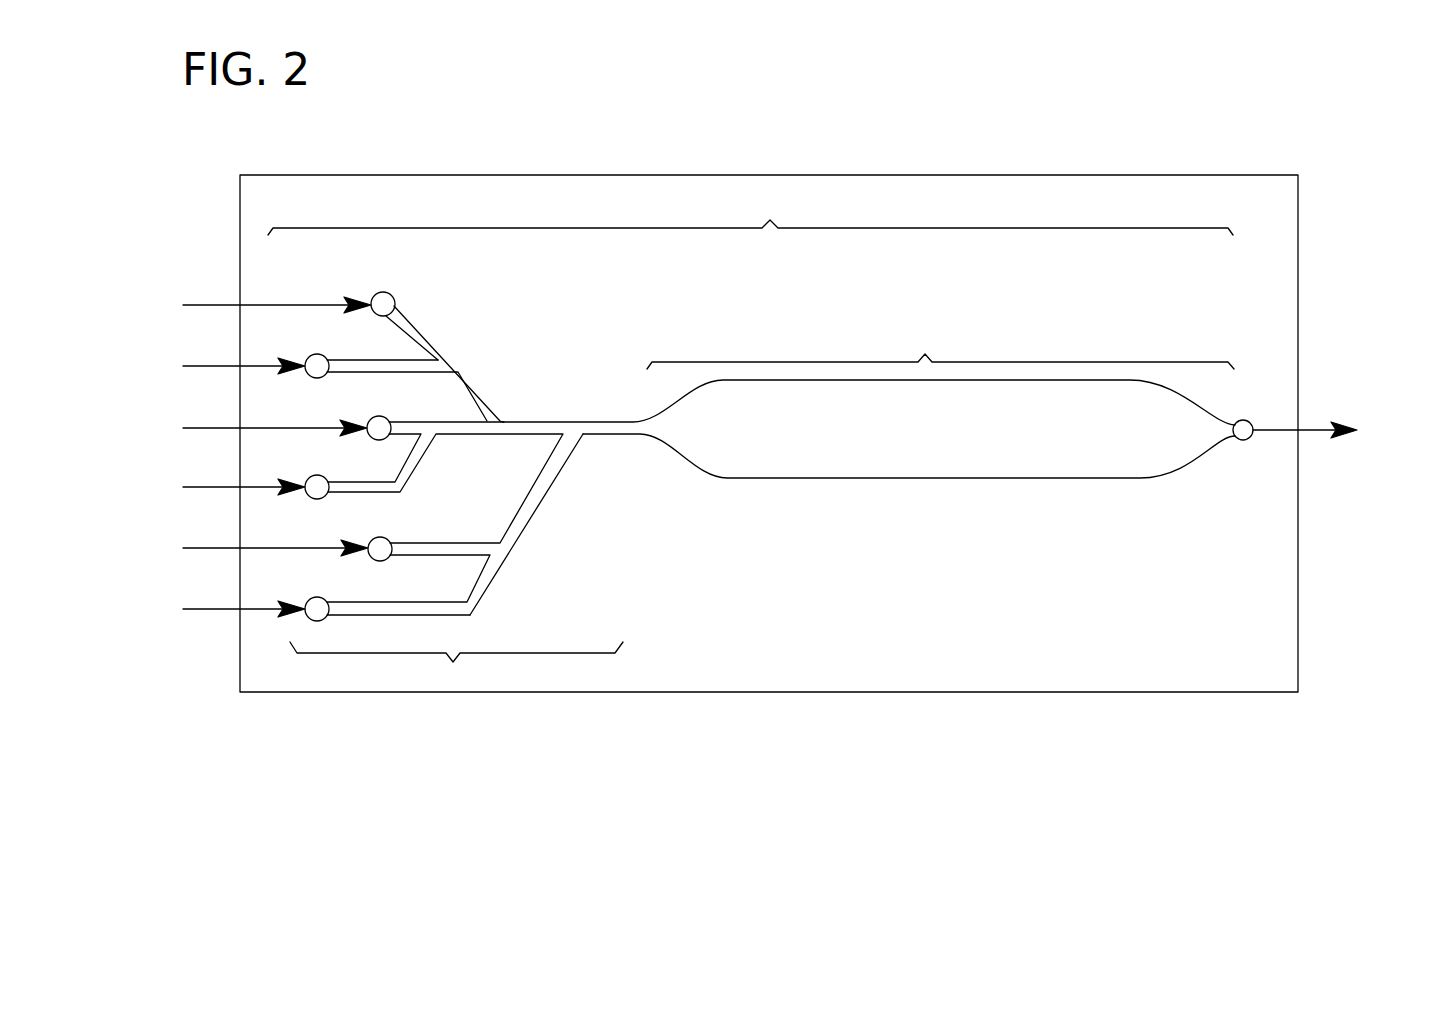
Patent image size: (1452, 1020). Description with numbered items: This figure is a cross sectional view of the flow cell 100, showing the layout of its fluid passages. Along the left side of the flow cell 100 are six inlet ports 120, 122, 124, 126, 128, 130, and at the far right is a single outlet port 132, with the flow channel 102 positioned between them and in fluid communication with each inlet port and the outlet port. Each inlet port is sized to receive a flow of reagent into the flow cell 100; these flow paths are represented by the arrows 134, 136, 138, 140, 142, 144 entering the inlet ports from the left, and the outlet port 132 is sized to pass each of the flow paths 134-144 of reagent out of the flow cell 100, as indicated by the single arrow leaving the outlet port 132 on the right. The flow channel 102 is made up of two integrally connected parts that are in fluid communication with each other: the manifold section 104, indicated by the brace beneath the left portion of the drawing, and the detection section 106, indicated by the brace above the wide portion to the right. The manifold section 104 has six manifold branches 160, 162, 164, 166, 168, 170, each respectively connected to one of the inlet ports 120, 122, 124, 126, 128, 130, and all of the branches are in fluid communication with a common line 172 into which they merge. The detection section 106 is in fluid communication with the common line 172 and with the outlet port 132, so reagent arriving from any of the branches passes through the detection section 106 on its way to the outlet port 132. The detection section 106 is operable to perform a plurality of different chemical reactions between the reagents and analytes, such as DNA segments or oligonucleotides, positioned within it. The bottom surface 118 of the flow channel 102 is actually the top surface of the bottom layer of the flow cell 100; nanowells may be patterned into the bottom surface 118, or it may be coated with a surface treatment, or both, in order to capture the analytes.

The flow cell 100 is at (822, 143).
The flow channel 102 is at (750, 215).
The manifold section 104 is at (456, 666).
The detection section 106 is at (940, 348).
The bottom surface 118 is at (688, 443).
The inlet port 120 is at (393, 297).
The inlet port 122 is at (316, 354).
The inlet port 124 is at (383, 416).
The inlet port 126 is at (309, 496).
The inlet port 128 is at (383, 537).
The inlet port 130 is at (309, 617).
The outlet port 132 is at (1247, 439).
The flow path 134 is at (218, 303).
The flow path 136 is at (209, 364).
The flow path 138 is at (220, 426).
The flow path 140 is at (215, 485).
The flow path 142 is at (218, 546).
The flow path 144 is at (212, 607).
The flow paths 134-144 is at (1313, 428).
The manifold branch 160 is at (432, 346).
The manifold branch 162 is at (396, 359).
The manifold branch 164 is at (403, 436).
The manifold branch 166 is at (417, 466).
The manifold branch 168 is at (474, 542).
The manifold branch 170 is at (414, 602).
The common line 172 is at (602, 434).